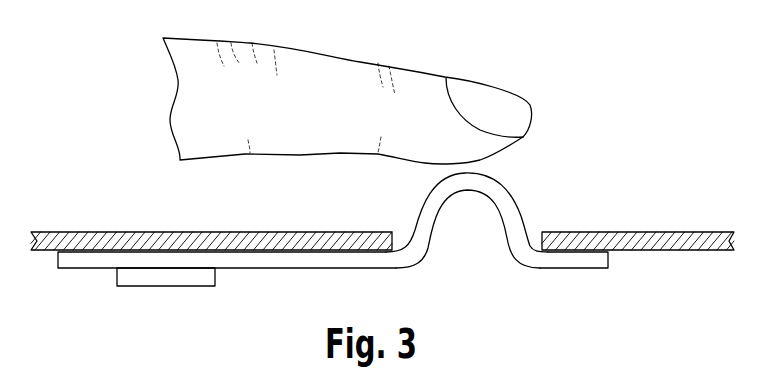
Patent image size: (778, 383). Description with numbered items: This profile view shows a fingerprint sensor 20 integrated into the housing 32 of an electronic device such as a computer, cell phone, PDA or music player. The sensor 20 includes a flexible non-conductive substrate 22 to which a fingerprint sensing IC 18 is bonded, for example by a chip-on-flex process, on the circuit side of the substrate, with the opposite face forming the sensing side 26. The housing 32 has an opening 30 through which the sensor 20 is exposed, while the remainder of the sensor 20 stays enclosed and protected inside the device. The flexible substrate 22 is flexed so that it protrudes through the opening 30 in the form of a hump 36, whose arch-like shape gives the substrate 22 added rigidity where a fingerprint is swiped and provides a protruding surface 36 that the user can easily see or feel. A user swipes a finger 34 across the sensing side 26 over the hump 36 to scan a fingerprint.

The fingerprint sensing IC 18 is at (142, 280).
The fingerprint sensor 20 is at (333, 254).
The flexible non-conductive substrate 22 is at (333, 236).
The sensing side 26 is at (421, 201).
The opening 30 is at (467, 266).
The housing 32 is at (68, 240).
The finger 34 is at (317, 70).
The hump 36 is at (497, 190).